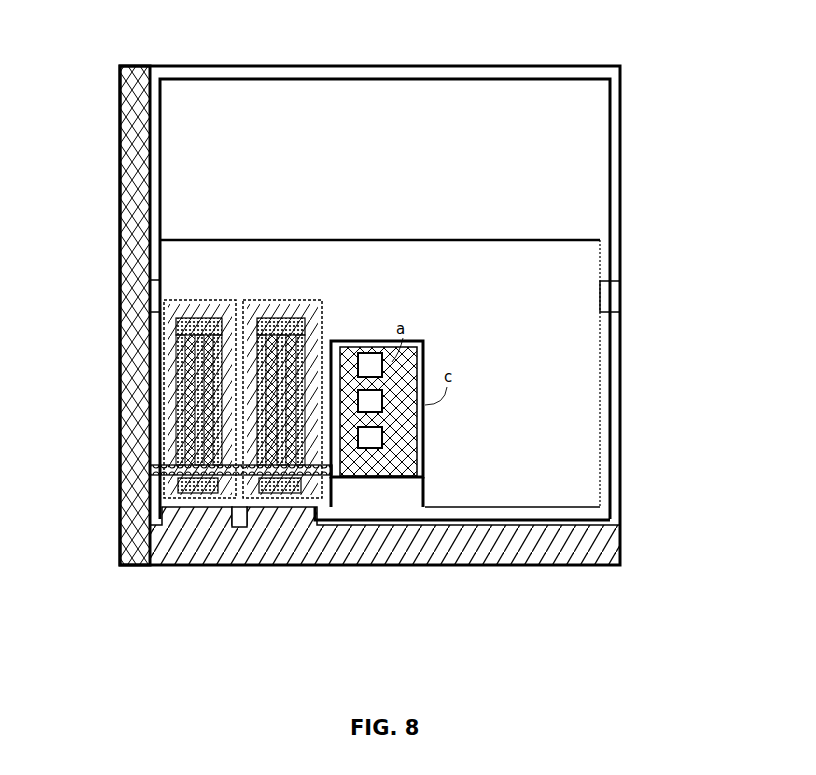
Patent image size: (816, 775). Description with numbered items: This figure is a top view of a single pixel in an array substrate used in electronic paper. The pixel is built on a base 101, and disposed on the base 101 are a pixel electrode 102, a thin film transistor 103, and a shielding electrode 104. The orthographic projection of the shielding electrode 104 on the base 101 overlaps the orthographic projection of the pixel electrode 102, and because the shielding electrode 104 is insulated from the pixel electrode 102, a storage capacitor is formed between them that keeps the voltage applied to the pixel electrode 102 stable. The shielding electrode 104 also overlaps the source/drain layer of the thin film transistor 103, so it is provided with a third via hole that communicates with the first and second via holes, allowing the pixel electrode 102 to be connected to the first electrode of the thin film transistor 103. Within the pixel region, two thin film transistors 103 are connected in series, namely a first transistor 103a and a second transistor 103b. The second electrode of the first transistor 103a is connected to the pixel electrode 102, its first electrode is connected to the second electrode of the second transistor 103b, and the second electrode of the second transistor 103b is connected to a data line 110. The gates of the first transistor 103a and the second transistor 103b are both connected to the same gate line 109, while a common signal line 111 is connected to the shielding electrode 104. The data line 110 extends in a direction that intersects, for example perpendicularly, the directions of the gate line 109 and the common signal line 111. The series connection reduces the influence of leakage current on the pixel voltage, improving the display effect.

The base 101 is at (620, 70).
The pixel electrode 102 is at (584, 133).
The thin film transistor 103 is at (243, 475).
The first transistor 103a is at (289, 500).
The second transistor 103b is at (202, 500).
The shielding electrode 104 is at (569, 395).
The gate line 109 is at (598, 548).
The data line 110 is at (135, 118).
The common signal line 111 is at (620, 296).